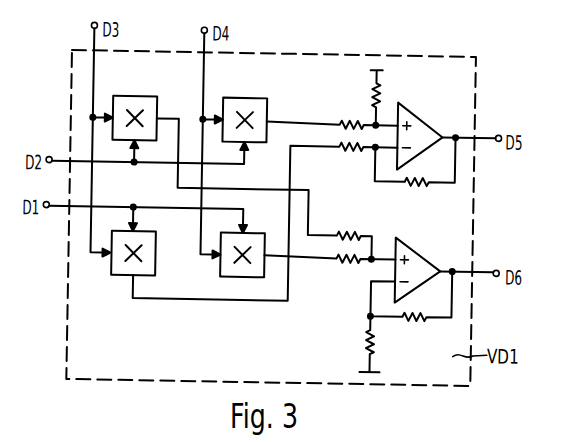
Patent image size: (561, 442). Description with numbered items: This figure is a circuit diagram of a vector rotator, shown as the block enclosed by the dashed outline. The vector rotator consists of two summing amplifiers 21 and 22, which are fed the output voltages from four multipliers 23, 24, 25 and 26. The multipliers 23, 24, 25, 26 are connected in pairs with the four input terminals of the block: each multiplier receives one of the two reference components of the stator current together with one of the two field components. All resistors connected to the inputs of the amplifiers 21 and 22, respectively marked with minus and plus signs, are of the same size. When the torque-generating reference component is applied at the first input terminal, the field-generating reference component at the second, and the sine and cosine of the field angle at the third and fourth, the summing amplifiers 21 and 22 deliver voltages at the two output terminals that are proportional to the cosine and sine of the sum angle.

The summing amplifier 21 is at (414, 104).
The summing amplifier 22 is at (415, 244).
The multiplier 23 is at (126, 94).
The multiplier 24 is at (244, 78).
The multiplier 25 is at (121, 275).
The multiplier 26 is at (226, 275).